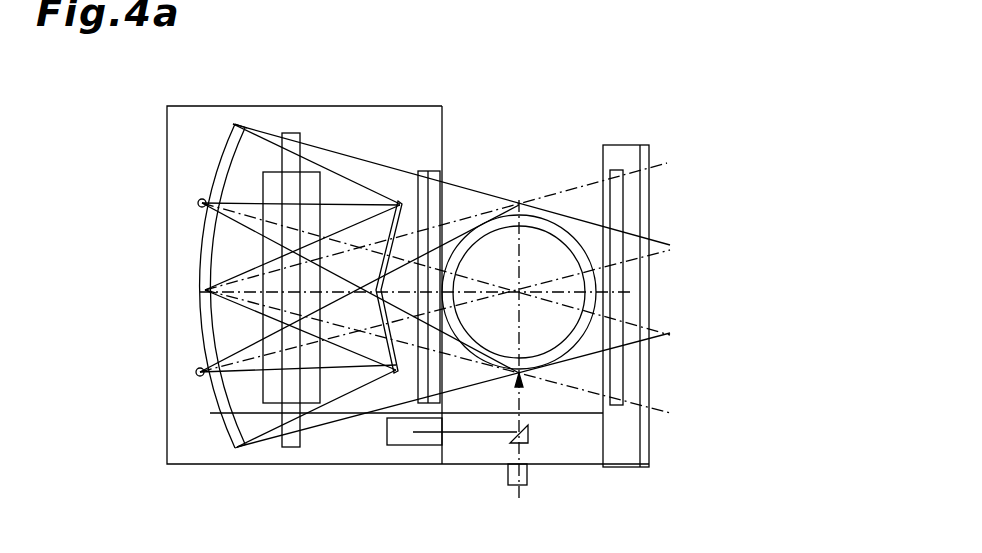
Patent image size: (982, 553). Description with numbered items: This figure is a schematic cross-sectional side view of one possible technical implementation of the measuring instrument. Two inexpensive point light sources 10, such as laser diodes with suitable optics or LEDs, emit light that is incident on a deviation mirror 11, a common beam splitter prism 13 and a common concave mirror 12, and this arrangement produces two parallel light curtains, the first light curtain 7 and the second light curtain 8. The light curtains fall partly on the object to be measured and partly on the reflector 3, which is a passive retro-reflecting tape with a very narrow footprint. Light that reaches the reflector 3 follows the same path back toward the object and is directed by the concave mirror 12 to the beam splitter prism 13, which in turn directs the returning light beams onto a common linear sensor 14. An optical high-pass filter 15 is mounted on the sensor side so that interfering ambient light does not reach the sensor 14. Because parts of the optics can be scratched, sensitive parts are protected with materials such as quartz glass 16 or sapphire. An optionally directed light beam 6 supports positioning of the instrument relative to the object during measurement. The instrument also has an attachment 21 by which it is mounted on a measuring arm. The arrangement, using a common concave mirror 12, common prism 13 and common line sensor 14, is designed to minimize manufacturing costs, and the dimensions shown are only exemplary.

The reflector 3 is at (620, 212).
The directed light beam 6 is at (523, 398).
The first light curtain 7 is at (365, 175).
The second light curtain 8 is at (383, 400).
The point light source 10 is at (198, 203).
The deviation mirror 11 is at (440, 258).
The concave mirror 12 is at (205, 315).
The beam splitter prism 13 is at (290, 447).
The linear sensor 14 is at (306, 407).
The optical high-pass filter 15 is at (425, 403).
The quartz glass 16 is at (448, 403).
The attachment 21 is at (513, 478).